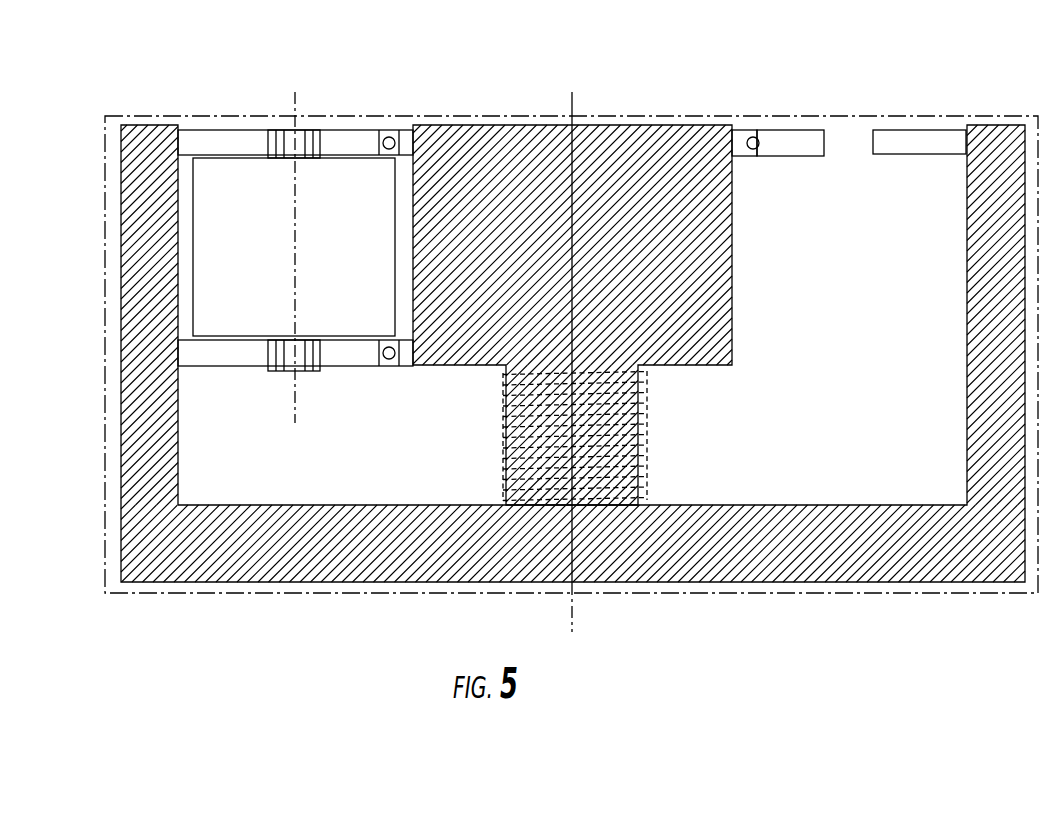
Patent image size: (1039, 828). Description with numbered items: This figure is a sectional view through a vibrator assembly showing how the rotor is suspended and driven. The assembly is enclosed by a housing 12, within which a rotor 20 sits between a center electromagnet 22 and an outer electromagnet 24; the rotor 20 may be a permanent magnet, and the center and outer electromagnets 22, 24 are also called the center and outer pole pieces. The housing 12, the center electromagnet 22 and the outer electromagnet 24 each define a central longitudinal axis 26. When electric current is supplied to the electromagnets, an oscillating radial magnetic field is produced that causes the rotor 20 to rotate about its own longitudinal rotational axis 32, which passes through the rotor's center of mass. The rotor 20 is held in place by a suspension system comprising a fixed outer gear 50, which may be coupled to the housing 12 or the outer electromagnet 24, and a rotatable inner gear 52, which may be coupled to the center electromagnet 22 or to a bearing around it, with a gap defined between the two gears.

The housing 12 is at (105, 365).
The rotor 20 is at (362, 200).
The center electromagnet 22 is at (628, 128).
The outer electromagnet 24 is at (157, 124).
The central longitudinal axis 26 is at (575, 379).
The longitudinal rotational axis 32 is at (297, 272).
The outer gear 50 is at (255, 128).
The inner gear 52 is at (370, 128).